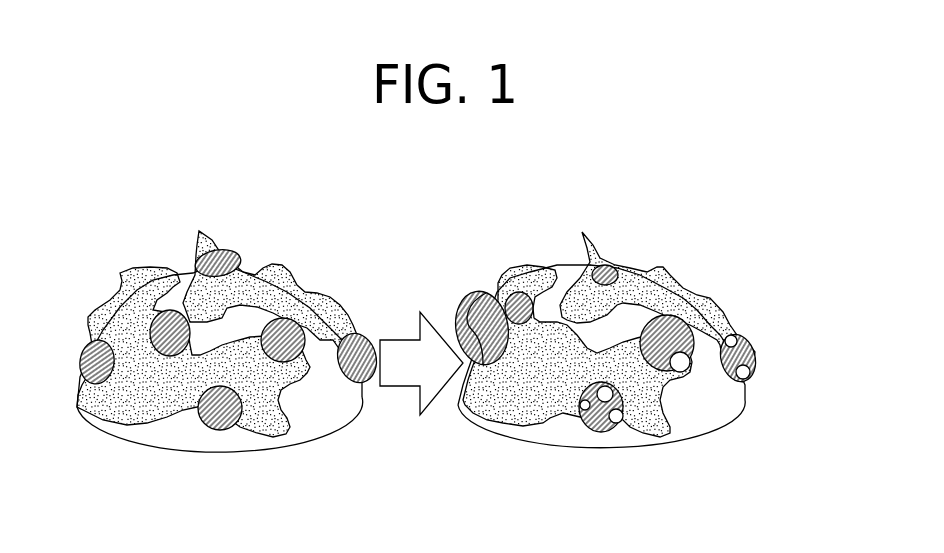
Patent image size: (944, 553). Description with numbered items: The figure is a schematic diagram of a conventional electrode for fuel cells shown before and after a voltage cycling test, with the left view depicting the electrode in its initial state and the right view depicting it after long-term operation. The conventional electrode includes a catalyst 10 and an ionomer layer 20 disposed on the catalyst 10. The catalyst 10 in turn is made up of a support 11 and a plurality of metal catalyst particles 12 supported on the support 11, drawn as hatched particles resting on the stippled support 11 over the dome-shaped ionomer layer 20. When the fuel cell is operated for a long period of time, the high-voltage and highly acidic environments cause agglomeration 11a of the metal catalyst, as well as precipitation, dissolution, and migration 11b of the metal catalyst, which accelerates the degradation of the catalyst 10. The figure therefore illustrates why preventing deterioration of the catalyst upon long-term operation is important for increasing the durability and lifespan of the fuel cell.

The catalyst 10 is at (160, 164).
The support 11 is at (188, 285).
The metal catalyst particles 12 is at (200, 263).
The ionomer layer 20 is at (113, 318).
The agglomeration 11a is at (483, 290).
The migration 11b is at (677, 325).